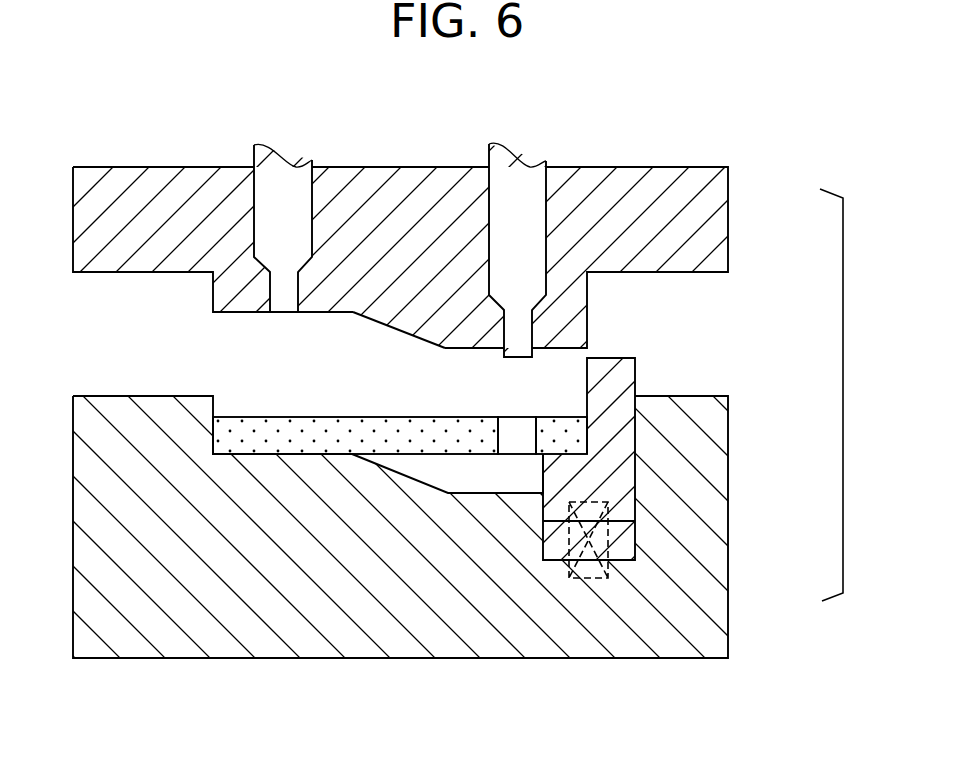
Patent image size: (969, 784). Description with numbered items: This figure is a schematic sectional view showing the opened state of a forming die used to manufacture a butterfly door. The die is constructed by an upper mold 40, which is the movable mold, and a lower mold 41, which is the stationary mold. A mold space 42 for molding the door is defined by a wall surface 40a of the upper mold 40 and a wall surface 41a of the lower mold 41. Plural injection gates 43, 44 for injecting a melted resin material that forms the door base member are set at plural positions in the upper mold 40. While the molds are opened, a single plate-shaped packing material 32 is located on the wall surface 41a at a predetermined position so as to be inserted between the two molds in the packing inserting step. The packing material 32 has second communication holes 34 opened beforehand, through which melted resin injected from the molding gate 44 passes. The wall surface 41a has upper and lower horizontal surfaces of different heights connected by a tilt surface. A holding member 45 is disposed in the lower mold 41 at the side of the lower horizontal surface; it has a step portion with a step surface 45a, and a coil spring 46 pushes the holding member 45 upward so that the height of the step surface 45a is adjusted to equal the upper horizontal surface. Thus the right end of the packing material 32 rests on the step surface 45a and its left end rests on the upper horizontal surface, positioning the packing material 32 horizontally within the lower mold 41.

The upper mold 40 is at (717, 222).
The wall surface of upper mold 40a is at (393, 333).
The injection gate 43 is at (280, 297).
The molding gate 44 is at (515, 337).
The lower mold 41 is at (703, 517).
The wall surface of lower mold 41a is at (490, 495).
The mold space 42 is at (445, 468).
The packing material 32 is at (262, 432).
The second communication hole 34 is at (512, 427).
The holding member 45 is at (613, 395).
The step surface 45a is at (566, 460).
The coil spring 46 is at (635, 536).